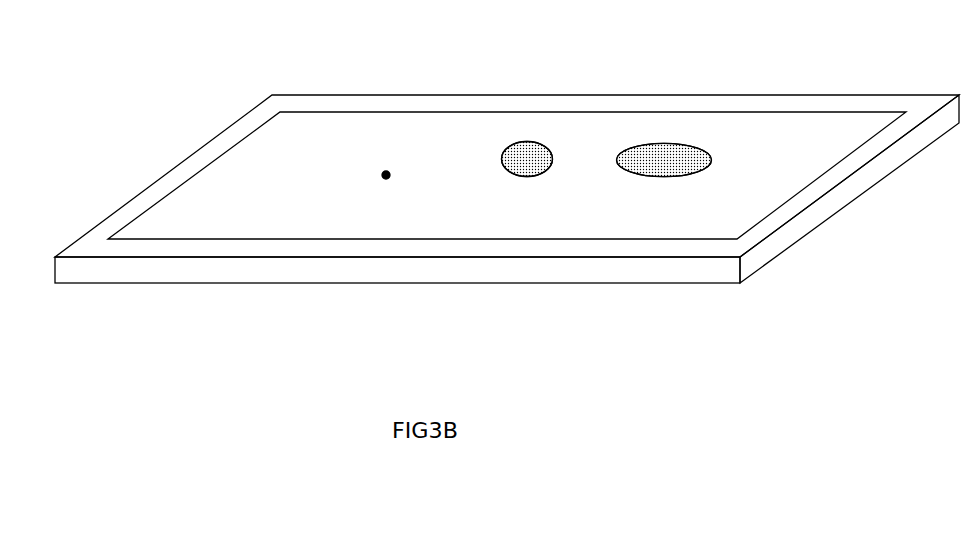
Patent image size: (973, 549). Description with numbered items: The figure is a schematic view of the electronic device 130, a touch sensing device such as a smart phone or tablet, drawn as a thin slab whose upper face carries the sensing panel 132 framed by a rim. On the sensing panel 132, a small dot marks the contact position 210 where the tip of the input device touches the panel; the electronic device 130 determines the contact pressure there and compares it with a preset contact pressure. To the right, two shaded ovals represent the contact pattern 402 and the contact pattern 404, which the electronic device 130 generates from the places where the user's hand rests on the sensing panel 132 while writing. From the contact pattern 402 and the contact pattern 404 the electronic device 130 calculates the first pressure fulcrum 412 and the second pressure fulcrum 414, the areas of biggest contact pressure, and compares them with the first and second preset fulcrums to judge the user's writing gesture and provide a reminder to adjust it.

The electronic device 130 is at (277, 106).
The sensing panel 132 is at (230, 160).
The contact position 210 is at (386, 178).
The contact pattern 402 is at (527, 177).
The contact pattern 404 is at (666, 177).
The first pressure fulcrum 412 is at (527, 160).
The second pressure fulcrum 414 is at (667, 158).